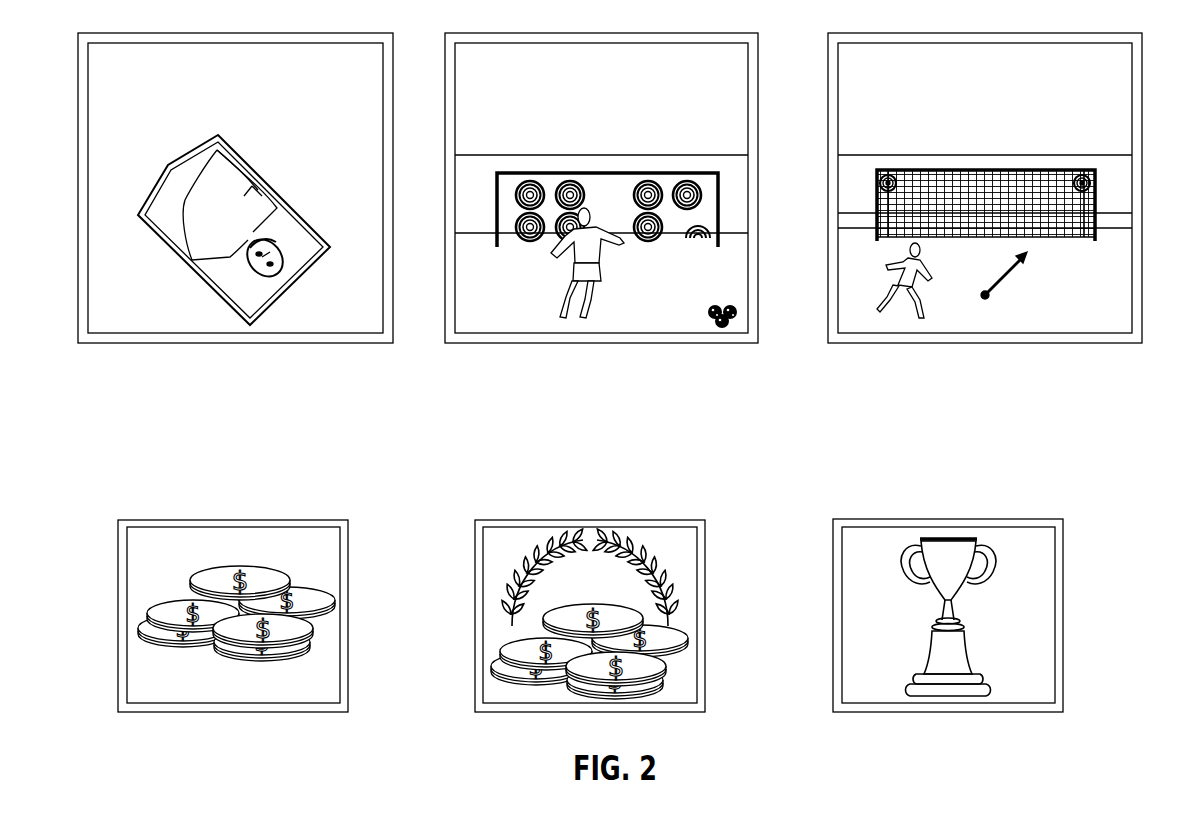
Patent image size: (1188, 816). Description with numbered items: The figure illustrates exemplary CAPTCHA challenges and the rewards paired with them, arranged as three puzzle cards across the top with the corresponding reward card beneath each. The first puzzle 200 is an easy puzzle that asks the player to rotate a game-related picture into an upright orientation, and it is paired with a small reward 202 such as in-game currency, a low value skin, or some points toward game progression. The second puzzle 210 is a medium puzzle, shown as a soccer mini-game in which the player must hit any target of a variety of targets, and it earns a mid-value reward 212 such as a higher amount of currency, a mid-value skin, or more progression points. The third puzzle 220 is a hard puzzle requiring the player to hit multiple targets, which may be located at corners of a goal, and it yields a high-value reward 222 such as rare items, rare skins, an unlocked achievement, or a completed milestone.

The first puzzle 200 is at (142, 33).
The second puzzle 210 is at (508, 33).
The third puzzle 220 is at (1078, 33).
The small reward 202 is at (182, 520).
The mid-value reward 212 is at (538, 520).
The high-value reward 222 is at (1000, 519).